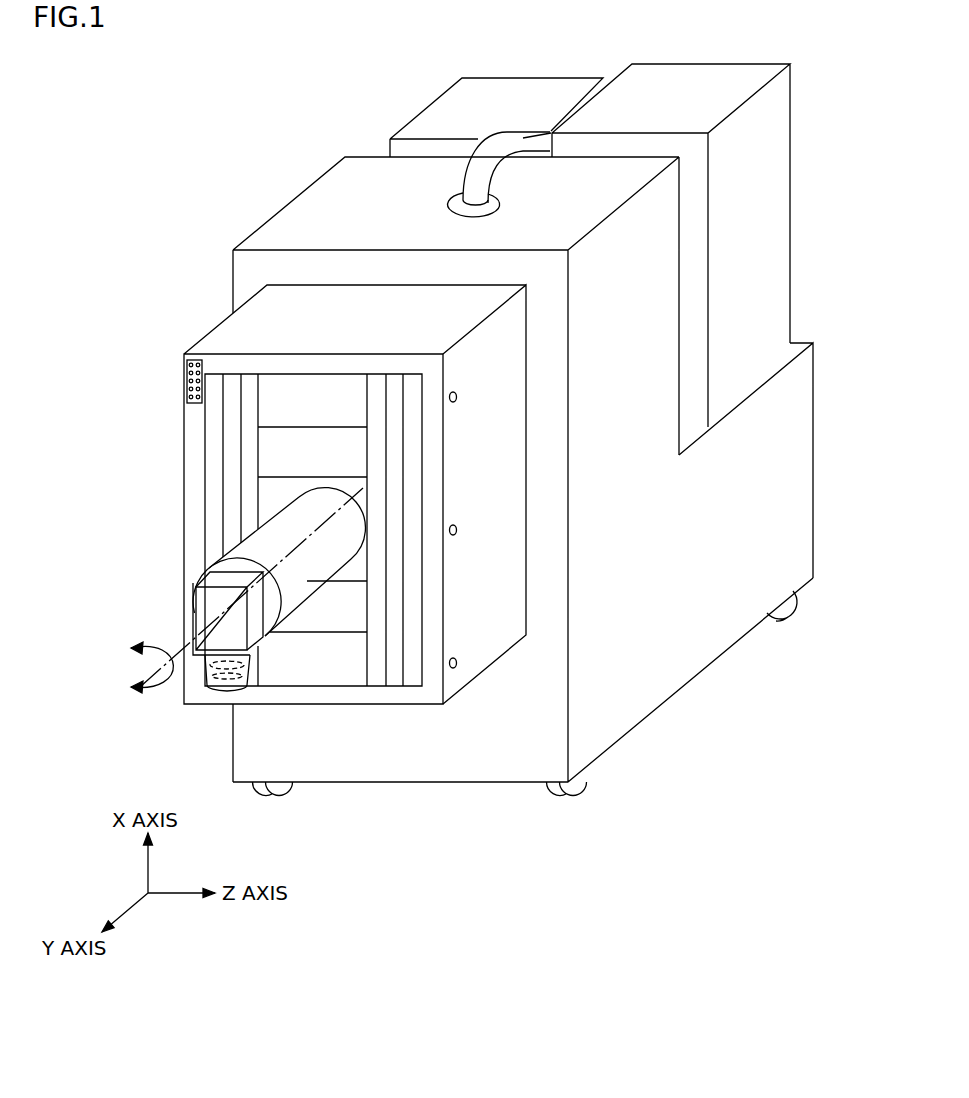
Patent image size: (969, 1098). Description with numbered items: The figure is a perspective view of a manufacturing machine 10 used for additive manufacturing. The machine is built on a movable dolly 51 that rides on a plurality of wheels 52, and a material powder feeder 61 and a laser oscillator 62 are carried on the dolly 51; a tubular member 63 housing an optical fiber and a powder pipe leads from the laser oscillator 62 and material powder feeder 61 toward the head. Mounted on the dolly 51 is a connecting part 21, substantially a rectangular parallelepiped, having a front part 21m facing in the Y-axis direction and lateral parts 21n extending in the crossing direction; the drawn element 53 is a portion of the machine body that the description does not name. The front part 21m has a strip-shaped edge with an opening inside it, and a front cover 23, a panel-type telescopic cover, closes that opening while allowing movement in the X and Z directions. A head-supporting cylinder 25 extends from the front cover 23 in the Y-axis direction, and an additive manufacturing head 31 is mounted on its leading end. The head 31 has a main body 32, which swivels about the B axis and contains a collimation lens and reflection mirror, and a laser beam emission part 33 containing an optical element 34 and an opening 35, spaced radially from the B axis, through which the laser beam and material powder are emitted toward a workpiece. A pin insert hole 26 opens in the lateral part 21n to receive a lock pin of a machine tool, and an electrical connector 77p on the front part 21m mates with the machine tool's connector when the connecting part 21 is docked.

The manufacturing machine 10 is at (247, 152).
The connecting part 21 is at (202, 337).
The front part 21m is at (430, 697).
The lateral part 21n is at (503, 615).
The front cover 23 is at (393, 658).
The head-supporting cylinder 25 is at (243, 543).
The pin insert hole 26 is at (460, 666).
The additive manufacturing head 31 is at (192, 610).
The main body 32 is at (217, 578).
The laser beam emission part 33 is at (243, 677).
The optical element 34 is at (203, 683).
The opening 35 is at (227, 687).
The dolly 51 is at (778, 540).
The wheels 52 is at (577, 790).
The rear housing 53 is at (795, 434).
The material powder feeder 61 is at (693, 77).
The laser oscillator 62 is at (525, 95).
The tubular member 63 is at (518, 143).
The electrical connector 77p is at (187, 386).